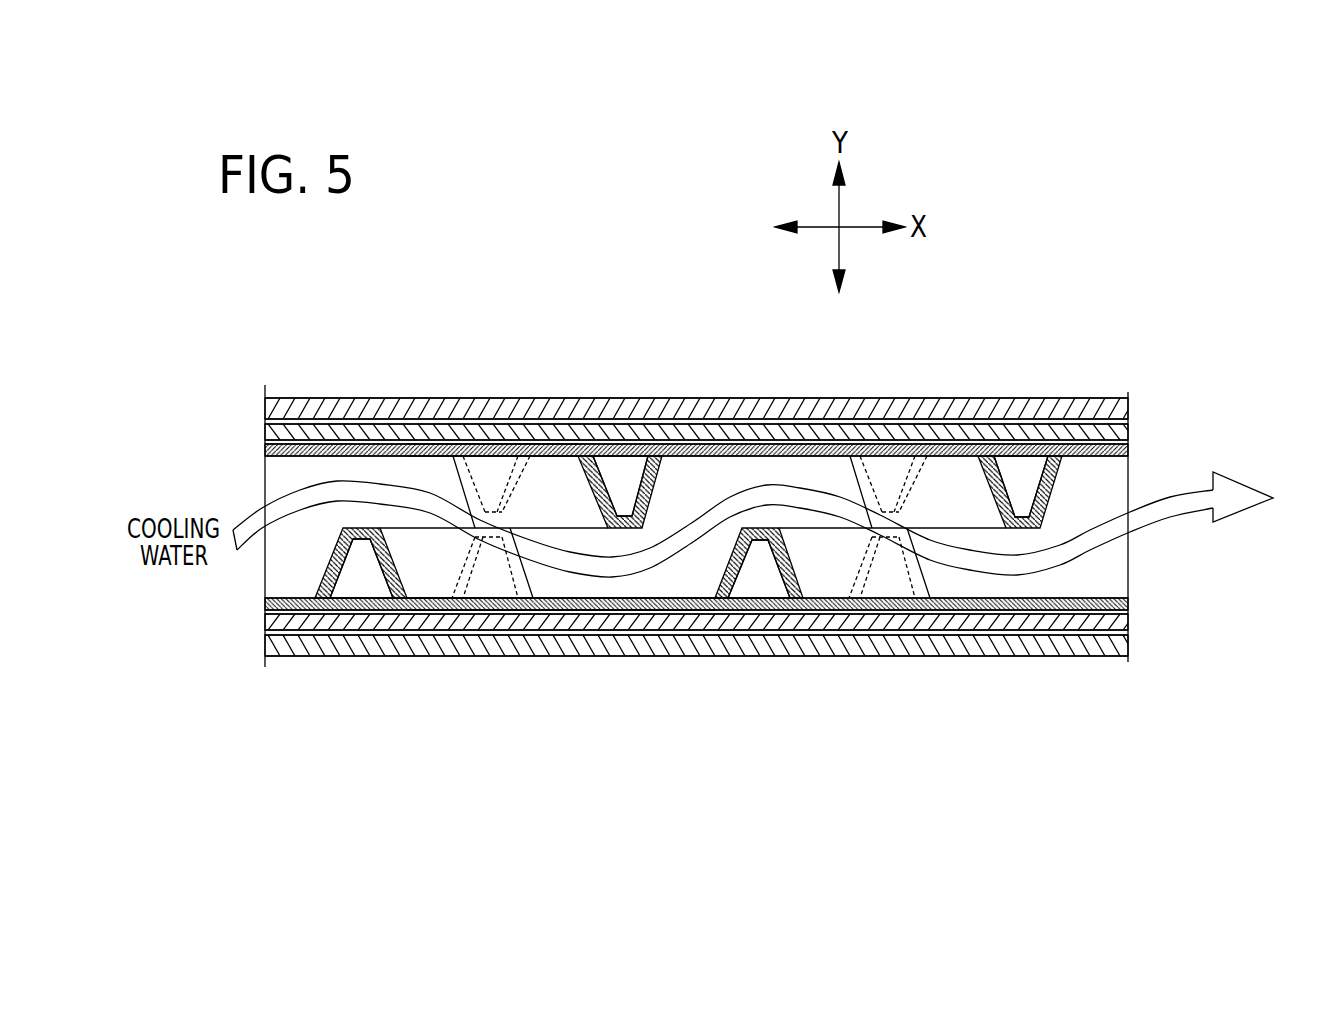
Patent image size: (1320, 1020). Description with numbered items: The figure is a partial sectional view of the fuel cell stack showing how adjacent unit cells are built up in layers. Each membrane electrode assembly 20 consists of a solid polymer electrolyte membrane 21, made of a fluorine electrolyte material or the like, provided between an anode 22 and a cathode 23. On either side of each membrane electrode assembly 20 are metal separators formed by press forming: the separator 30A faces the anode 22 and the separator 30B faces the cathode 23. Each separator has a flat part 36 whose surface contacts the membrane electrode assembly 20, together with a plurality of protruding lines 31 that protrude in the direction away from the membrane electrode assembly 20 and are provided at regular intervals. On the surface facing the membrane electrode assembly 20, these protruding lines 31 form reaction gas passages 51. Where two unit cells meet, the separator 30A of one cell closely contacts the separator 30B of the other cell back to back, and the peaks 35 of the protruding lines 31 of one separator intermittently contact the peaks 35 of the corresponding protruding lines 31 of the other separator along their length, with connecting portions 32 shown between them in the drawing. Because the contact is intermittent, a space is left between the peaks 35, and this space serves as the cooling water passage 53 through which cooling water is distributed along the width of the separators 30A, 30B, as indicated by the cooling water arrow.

The membrane electrode assembly 20 is at (773, 518).
The solid polymer electrolyte membrane 21 is at (1130, 425).
The anode 22 is at (1130, 402).
The cathode 23 is at (741, 551).
The separator 30A is at (290, 596).
The separator 30B is at (277, 460).
The protruding line 31 is at (658, 487).
The connecting portion 32 is at (928, 587).
The peak 35 is at (757, 528).
The flat part 36 is at (537, 447).
The reaction gas passage 51 is at (622, 460).
The cooling water passage 53 is at (1103, 570).